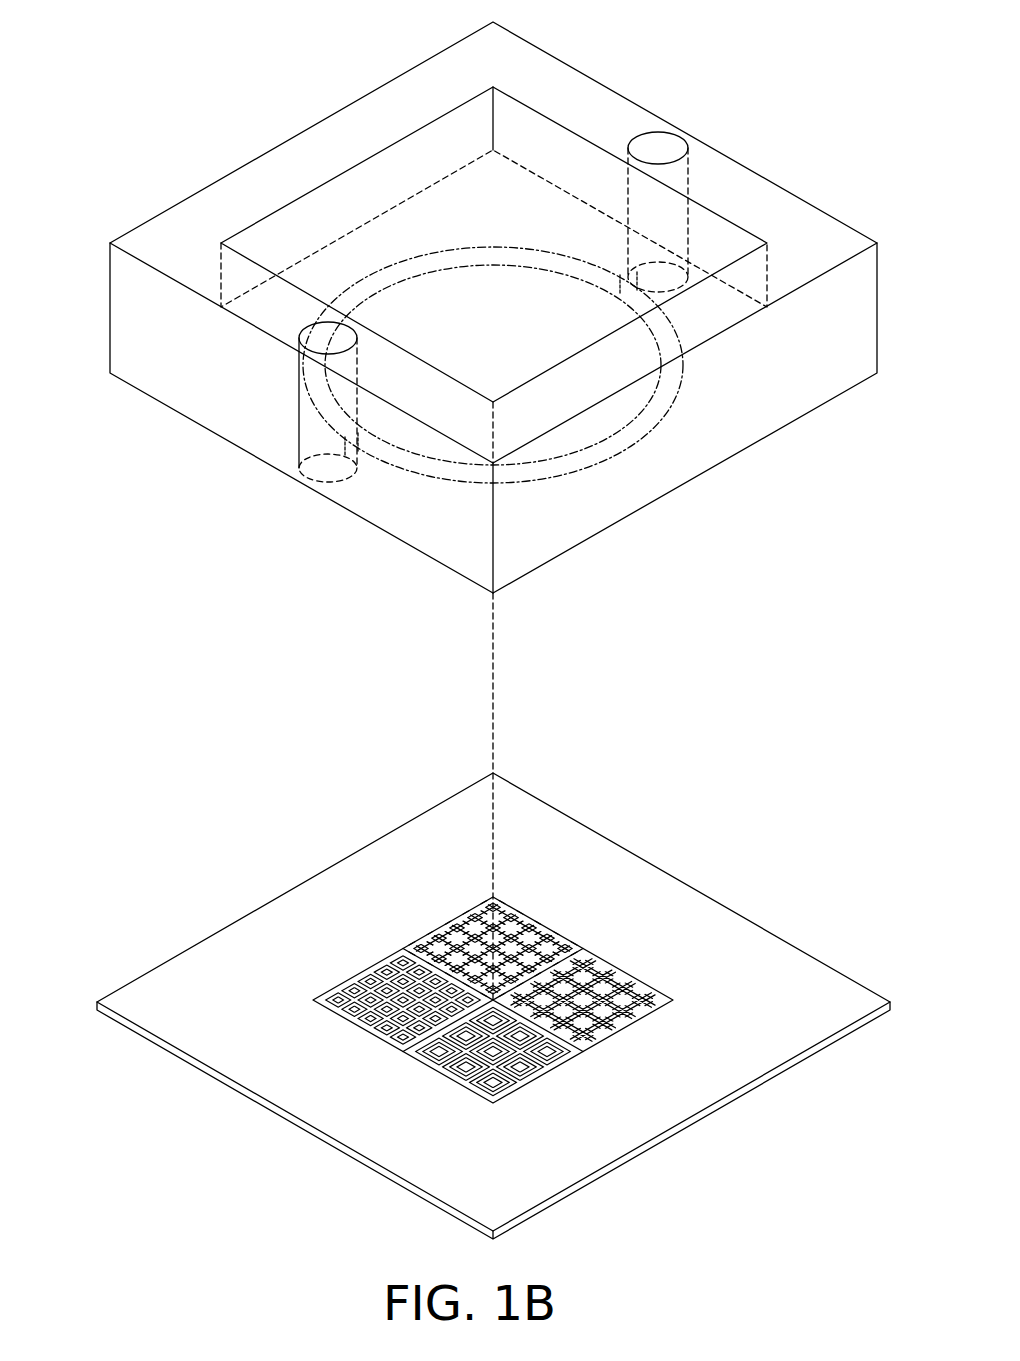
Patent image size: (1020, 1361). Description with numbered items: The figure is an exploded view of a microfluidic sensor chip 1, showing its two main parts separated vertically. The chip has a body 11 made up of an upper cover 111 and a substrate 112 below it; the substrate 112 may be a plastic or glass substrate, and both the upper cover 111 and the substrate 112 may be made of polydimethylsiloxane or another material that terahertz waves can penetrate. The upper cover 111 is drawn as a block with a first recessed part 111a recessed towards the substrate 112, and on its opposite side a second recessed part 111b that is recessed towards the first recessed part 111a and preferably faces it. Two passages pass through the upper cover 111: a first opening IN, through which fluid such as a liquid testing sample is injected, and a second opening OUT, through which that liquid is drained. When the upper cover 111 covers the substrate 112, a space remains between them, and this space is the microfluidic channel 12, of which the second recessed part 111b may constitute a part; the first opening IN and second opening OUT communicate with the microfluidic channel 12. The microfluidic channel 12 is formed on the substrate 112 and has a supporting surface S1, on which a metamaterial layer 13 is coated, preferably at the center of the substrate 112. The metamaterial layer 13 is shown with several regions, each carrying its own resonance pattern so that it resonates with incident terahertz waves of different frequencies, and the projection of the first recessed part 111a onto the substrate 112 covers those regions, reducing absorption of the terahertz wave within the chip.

The microfluidic sensor chip 1 is at (100, 24).
The body 11 is at (78, 583).
The upper cover 111 is at (224, 400).
The first recessed part 111a is at (560, 156).
The second recessed part 111b is at (416, 472).
The substrate 112 is at (247, 945).
The microfluidic channel 12 is at (455, 217).
The metamaterial layer 13 is at (442, 916).
The supporting surface S1 is at (674, 942).
The first opening IN is at (670, 150).
The second opening OUT is at (336, 330).